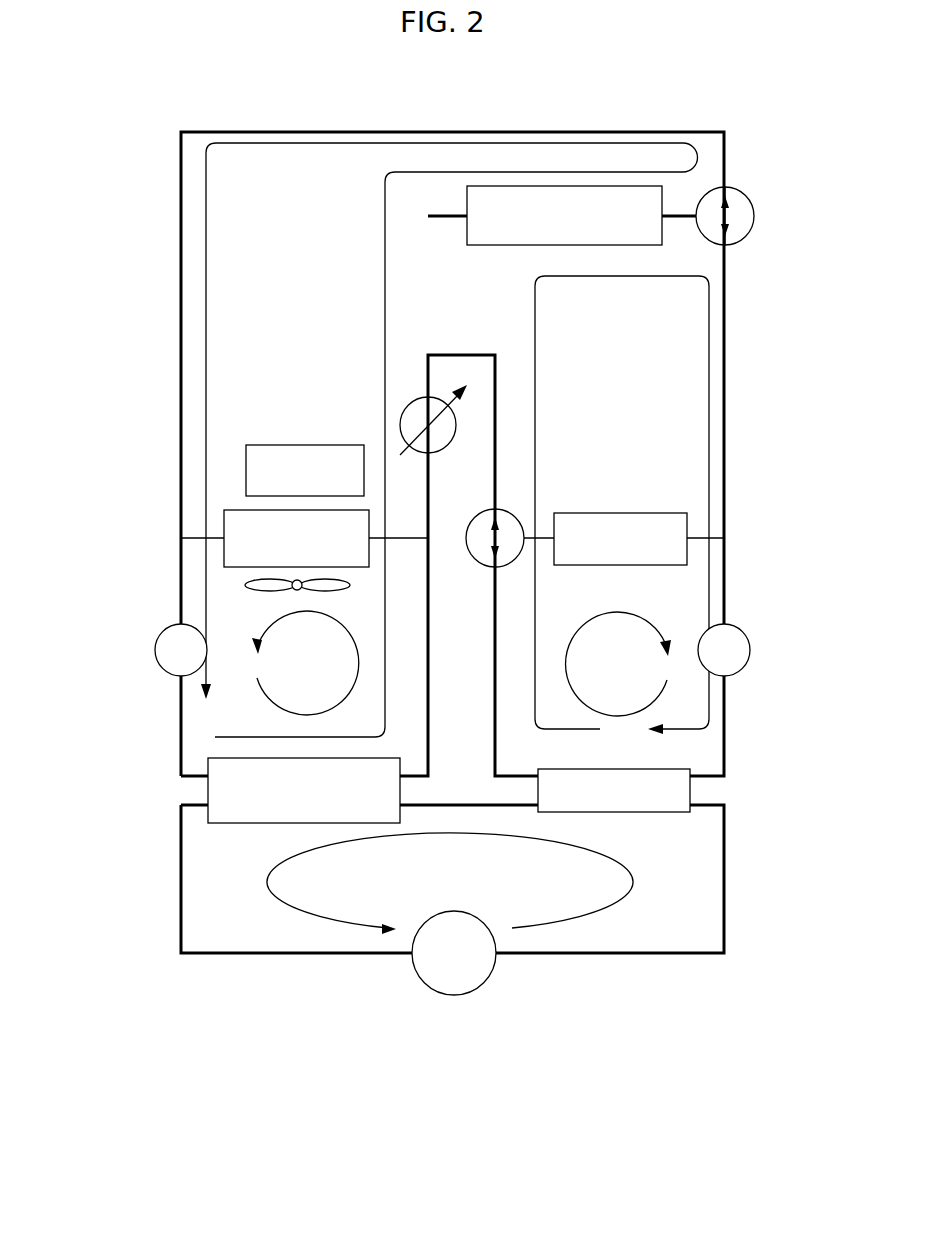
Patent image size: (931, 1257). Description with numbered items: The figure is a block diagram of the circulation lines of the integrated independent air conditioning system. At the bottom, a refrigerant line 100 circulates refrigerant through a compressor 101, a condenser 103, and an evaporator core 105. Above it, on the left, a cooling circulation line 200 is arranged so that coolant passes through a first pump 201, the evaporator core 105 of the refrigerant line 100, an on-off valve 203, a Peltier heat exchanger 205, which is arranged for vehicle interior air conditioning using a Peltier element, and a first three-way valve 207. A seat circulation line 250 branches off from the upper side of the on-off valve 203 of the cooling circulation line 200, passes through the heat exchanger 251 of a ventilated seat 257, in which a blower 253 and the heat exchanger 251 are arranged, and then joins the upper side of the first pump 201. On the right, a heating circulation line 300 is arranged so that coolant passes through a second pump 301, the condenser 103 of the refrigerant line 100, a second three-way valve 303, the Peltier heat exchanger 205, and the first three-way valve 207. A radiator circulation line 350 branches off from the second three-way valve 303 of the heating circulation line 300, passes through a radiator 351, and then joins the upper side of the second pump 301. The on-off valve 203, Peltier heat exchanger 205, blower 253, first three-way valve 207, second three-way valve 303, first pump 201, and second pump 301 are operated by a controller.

The refrigerant line 100 is at (307, 915).
The compressor 101 is at (453, 997).
The condenser 103 is at (655, 812).
The evaporator core 105 is at (217, 823).
The cooling circulation line 200 is at (206, 345).
The first pump 201 is at (160, 668).
The on-off valve 203 is at (408, 405).
The Peltier heat exchanger 205 is at (545, 186).
The first 3-way valve 207 is at (739, 191).
The seat circulation line 250 is at (265, 620).
The heat exchanger 251 is at (224, 520).
The blower 253 is at (244, 585).
The ventilated seat 257 is at (246, 456).
The heating circulation line 300 is at (710, 340).
The second pump 301 is at (743, 668).
The second 3-way valve 303 is at (512, 510).
The radiator circulation line 350 is at (650, 618).
The radiator 351 is at (665, 513).